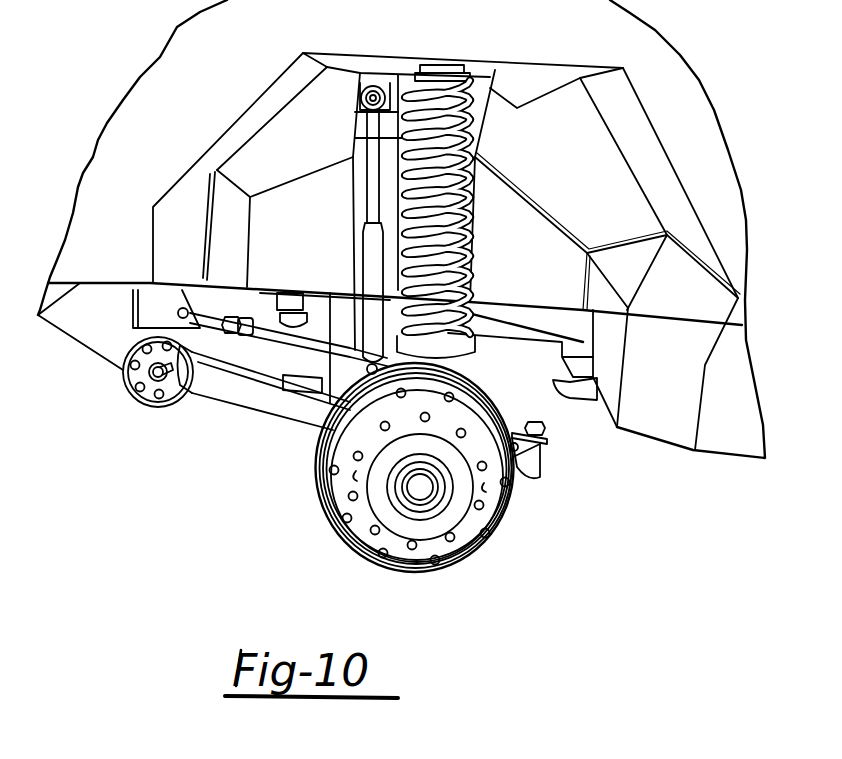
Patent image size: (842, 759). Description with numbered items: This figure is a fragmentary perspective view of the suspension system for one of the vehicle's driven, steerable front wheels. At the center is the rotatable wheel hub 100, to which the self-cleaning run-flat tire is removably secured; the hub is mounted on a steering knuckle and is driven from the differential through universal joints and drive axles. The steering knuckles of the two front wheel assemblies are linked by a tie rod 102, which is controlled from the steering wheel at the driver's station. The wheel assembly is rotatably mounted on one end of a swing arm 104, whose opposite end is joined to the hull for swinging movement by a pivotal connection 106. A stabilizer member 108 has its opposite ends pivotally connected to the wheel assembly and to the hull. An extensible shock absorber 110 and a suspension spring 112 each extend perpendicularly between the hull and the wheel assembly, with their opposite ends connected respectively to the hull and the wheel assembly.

The wheel hub 100 is at (475, 525).
The tie rod 102 is at (547, 443).
The swing arm 104 is at (238, 393).
The pivotal connection 106 is at (147, 380).
The stabilizer member 108 is at (310, 345).
The shock absorber 110 is at (367, 252).
The suspension spring 112 is at (462, 210).